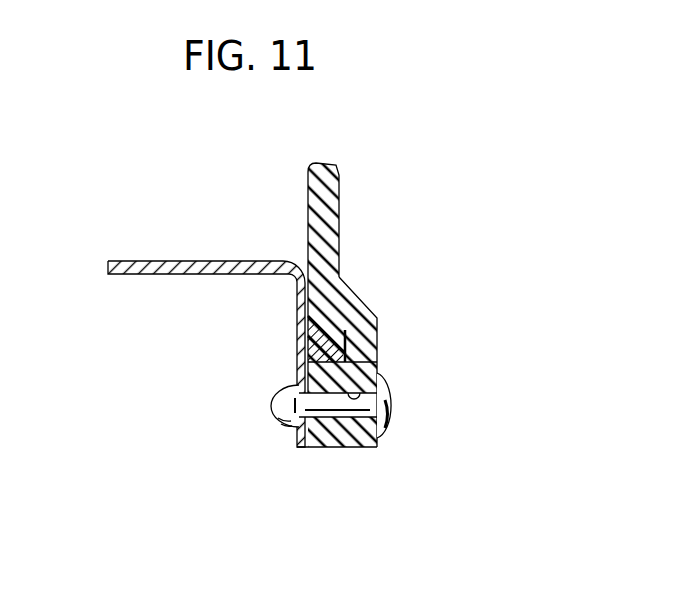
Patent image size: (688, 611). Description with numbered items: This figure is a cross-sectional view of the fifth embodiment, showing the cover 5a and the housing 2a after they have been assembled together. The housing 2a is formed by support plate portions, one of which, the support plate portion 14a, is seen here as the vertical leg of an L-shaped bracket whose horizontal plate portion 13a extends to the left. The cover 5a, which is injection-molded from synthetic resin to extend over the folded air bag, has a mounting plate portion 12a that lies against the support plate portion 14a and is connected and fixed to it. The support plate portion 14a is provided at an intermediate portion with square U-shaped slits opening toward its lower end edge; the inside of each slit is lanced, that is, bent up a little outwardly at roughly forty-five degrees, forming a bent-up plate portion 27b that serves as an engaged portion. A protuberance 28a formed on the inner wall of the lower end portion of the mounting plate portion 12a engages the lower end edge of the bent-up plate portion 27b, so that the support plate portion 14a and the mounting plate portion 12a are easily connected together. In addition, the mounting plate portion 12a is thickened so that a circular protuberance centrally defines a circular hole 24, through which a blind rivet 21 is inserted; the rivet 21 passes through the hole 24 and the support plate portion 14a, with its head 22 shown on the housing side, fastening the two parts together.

The housing 2a is at (206, 301).
The horizontal portion of bracket 13a is at (218, 259).
The support plate portion 14a is at (303, 297).
The cover 5a is at (396, 278).
The mounting plate portion 12a is at (340, 265).
The bent-up plate portion 27b is at (346, 334).
The circular hole 24 is at (372, 424).
The screw head 22 is at (292, 406).
The blind rivet 21 is at (392, 406).
The protuberance 28a is at (343, 449).